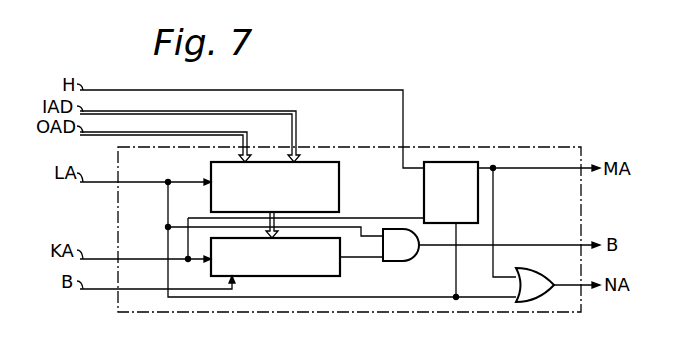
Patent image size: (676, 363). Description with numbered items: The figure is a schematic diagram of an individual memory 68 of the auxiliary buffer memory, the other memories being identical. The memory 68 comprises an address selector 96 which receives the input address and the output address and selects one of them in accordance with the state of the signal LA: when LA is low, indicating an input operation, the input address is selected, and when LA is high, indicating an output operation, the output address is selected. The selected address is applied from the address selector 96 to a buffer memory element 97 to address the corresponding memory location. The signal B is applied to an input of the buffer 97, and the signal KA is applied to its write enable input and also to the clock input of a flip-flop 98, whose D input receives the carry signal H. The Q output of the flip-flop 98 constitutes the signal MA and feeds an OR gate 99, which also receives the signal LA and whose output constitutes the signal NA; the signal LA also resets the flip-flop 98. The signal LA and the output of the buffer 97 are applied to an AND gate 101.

The memory 68 is at (537, 147).
The address selector 96 is at (325, 162).
The buffer memory element 97 is at (313, 276).
The flip-flop 98 is at (447, 162).
The OR gate 99 is at (523, 302).
The AND gate 101 is at (392, 262).